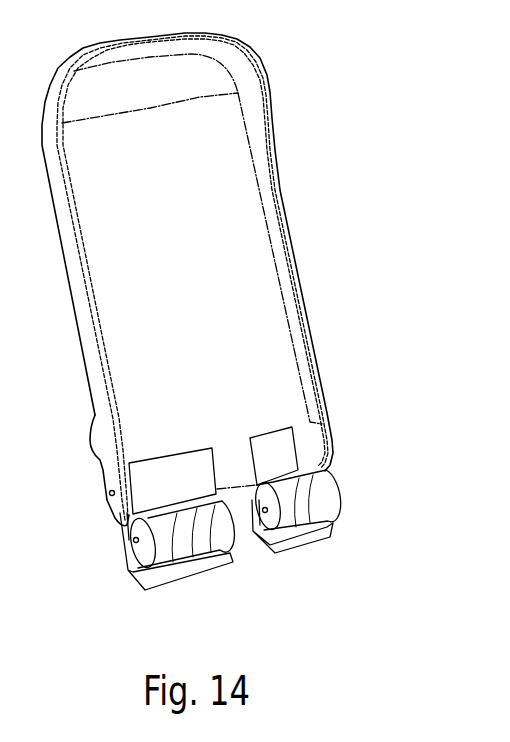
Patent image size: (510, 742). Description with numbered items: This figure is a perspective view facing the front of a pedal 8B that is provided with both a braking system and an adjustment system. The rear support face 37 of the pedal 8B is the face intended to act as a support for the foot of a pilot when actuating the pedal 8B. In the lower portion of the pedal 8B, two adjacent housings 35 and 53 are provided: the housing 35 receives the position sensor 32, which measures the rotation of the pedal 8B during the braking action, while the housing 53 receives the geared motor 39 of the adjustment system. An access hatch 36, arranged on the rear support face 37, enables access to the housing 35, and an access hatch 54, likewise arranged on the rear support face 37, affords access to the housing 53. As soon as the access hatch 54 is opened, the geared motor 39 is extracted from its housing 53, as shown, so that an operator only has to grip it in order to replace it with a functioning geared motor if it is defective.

The pedal 8B is at (272, 133).
The rear support face 37 is at (248, 284).
The housing 35 is at (150, 500).
The housing 53 is at (290, 453).
The position sensor 32 is at (138, 548).
The geared motor 39 is at (322, 503).
The access hatch 36 is at (205, 573).
The access hatch 54 is at (307, 550).